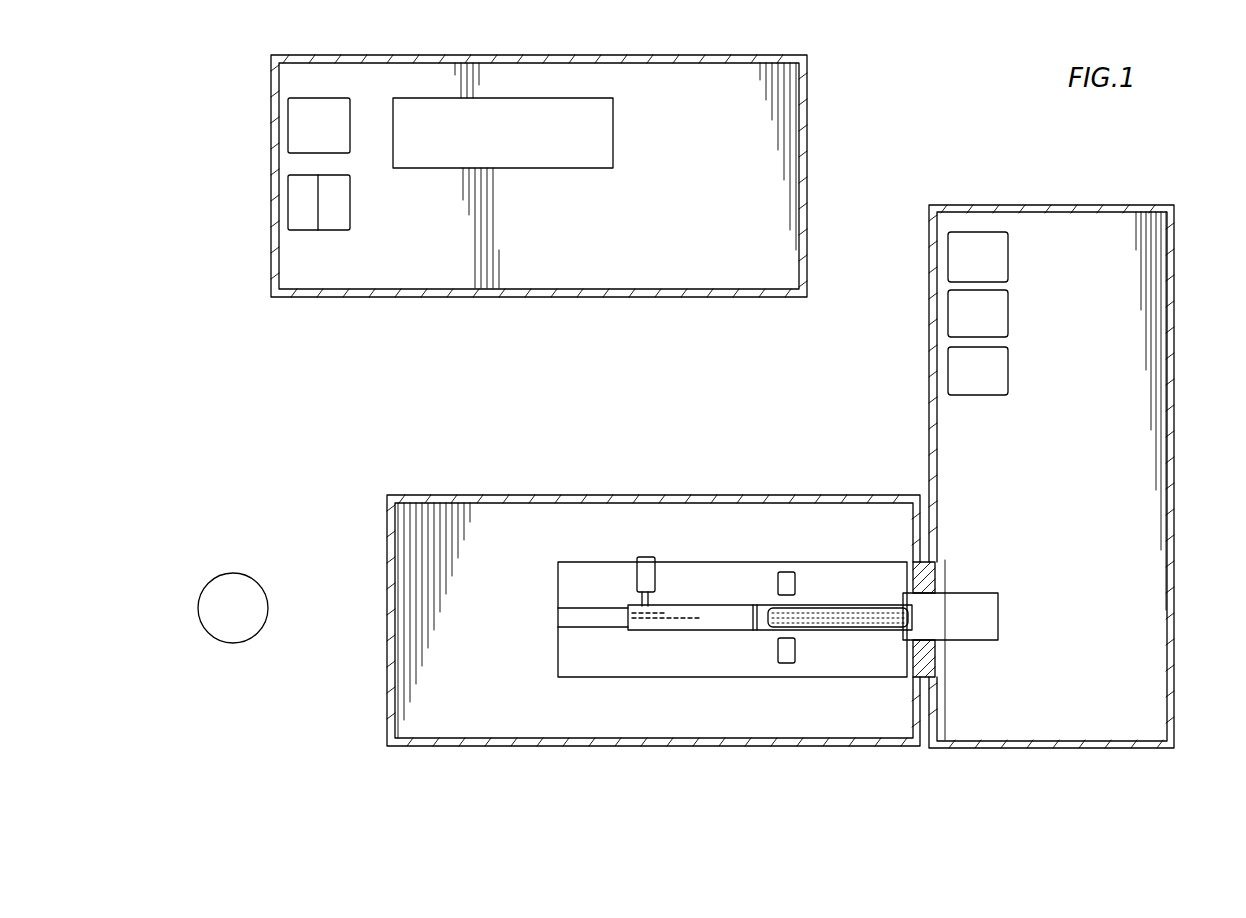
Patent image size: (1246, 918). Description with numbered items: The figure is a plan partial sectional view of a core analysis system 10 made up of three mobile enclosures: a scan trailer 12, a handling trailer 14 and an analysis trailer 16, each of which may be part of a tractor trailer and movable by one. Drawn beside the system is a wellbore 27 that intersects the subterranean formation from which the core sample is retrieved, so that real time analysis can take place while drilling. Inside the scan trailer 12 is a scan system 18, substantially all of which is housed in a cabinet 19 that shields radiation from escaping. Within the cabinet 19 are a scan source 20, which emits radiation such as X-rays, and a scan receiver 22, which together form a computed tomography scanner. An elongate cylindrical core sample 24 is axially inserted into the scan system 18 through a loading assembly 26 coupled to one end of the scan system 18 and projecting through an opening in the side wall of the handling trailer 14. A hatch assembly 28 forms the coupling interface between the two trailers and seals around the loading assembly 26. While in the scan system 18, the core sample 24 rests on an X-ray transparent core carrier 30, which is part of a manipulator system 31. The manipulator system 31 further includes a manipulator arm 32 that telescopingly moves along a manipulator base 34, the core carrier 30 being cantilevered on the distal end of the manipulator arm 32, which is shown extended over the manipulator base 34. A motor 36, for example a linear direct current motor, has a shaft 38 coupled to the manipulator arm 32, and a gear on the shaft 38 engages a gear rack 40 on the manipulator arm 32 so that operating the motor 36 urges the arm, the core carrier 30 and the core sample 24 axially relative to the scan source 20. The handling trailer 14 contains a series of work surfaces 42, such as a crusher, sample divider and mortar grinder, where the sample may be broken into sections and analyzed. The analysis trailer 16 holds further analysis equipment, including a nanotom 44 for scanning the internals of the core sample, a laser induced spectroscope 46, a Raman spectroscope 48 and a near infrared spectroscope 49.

The core analysis system 10 is at (252, 374).
The scan trailer 12 is at (512, 738).
The handling trailer 14 is at (1175, 422).
The analysis trailer 16 is at (808, 118).
The scan system 18 is at (748, 534).
The cabinet 19 is at (558, 578).
The scan source 20 is at (790, 570).
The scan receiver 22 is at (790, 665).
The core sample 24 is at (868, 633).
The loading assembly 26 is at (988, 580).
The wellbore 27 is at (241, 644).
The hatch assembly 28 is at (926, 558).
The core carrier 30 is at (852, 600).
The manipulator system 31 is at (625, 633).
The manipulator arm 32 is at (724, 625).
The manipulator base 34 is at (565, 612).
The motor 36 is at (645, 557).
The shaft 38 is at (661, 600).
The gear rack 40 is at (668, 628).
The work surfaces 42 is at (1028, 228).
The nanotom 44 is at (614, 133).
The laser induced spectroscope 46 is at (288, 116).
The Raman spectroscope 48 is at (350, 205).
The near infrared spectroscope 49 is at (290, 207).